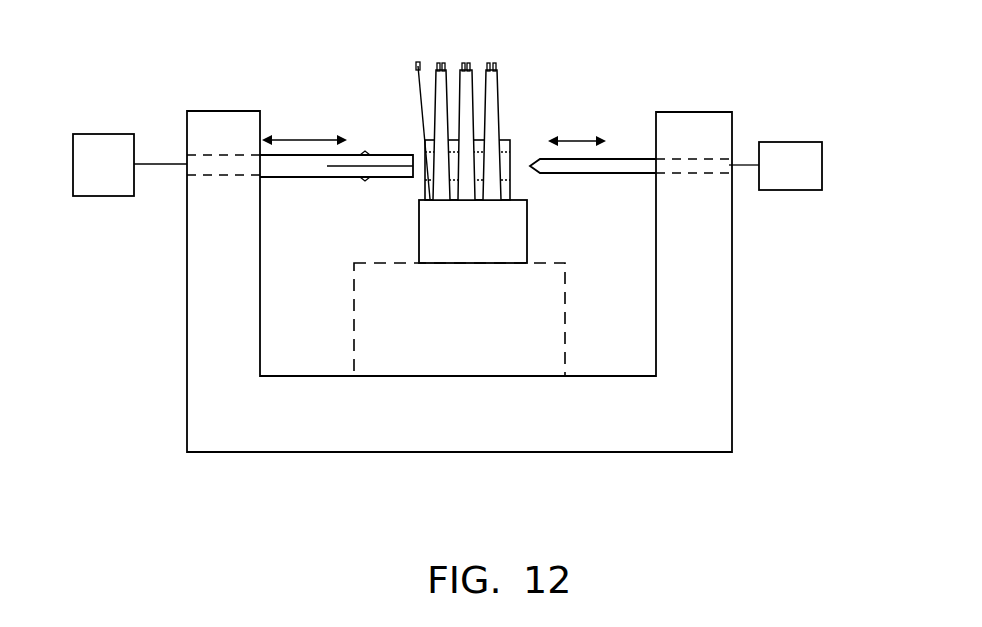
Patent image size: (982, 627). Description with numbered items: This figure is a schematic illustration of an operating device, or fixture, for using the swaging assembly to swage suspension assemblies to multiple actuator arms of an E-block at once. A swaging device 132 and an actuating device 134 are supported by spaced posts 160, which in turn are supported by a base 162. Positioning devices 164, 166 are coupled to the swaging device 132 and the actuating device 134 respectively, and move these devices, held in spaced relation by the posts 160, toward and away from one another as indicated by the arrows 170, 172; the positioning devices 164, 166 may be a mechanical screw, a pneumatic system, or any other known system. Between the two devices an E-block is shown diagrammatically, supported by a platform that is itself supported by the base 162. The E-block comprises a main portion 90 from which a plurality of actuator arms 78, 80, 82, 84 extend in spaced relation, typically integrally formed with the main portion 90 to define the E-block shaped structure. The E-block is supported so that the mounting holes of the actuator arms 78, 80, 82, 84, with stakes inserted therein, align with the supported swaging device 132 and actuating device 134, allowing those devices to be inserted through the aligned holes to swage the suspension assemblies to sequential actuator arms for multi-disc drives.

The actuator arm 78 is at (420, 189).
The actuator arm 80 is at (446, 188).
The actuator arm 82 is at (473, 196).
The actuator arm 84 is at (510, 145).
The main portion 90 is at (527, 250).
The swaging device 132 is at (357, 145).
The actuating device 134 is at (574, 143).
The posts 160 is at (199, 300).
The base 162 is at (438, 360).
The positioning device 164 is at (118, 126).
The positioning device 166 is at (788, 128).
The arrow 170 is at (290, 138).
The arrow 172 is at (600, 126).